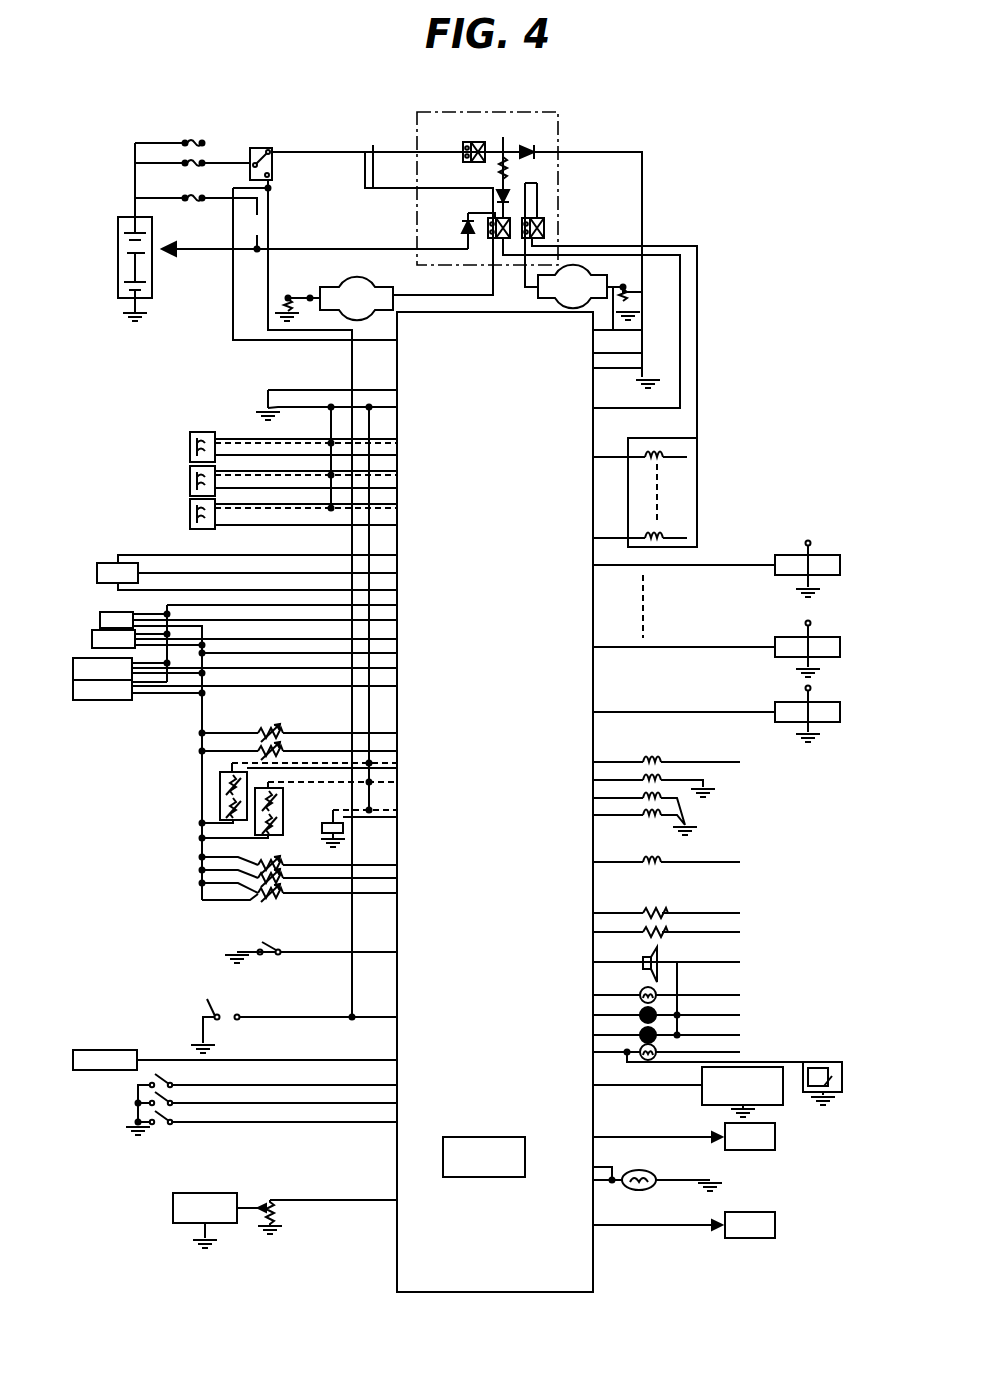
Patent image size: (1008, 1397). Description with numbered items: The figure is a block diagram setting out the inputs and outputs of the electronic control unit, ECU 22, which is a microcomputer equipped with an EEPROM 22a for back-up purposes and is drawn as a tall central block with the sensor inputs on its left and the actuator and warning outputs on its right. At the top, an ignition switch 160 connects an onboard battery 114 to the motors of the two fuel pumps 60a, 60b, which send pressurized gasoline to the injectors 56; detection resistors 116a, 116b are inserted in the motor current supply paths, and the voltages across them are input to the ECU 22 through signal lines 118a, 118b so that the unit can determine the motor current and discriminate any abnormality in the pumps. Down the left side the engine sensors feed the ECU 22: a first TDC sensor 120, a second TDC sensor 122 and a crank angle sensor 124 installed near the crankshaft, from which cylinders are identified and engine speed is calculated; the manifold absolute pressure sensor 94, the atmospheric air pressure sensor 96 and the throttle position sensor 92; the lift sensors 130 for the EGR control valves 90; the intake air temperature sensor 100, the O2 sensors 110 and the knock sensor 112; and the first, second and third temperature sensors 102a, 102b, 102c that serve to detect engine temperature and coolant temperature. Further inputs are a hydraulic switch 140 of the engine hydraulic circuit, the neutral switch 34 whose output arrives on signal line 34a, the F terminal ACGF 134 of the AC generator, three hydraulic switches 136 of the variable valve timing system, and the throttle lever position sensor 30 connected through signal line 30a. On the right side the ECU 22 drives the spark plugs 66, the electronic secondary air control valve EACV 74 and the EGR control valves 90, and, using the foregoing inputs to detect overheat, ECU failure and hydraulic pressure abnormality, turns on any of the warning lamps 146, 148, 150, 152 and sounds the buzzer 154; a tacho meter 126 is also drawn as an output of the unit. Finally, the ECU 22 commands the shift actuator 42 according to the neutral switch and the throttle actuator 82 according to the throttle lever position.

The electronic control unit (ECU) 22 is at (530, 750).
The EEPROM 22a is at (487, 1137).
The ignition switch 160 is at (268, 142).
The onboard battery 114 is at (118, 268).
The detection resistor 116a is at (287, 297).
The detection resistor 116b is at (632, 290).
The fuel pump 60a is at (376, 287).
The fuel pump 60b is at (586, 270).
The signal line 118a is at (370, 322).
The signal line 118b is at (640, 339).
The injector 56 is at (690, 438).
The first TDC sensor 120 is at (190, 450).
The second TDC sensor 122 is at (190, 483).
The crank angle sensor 124 is at (190, 517).
The manifold absolute pressure sensor 94 is at (97, 573).
The atmospheric air pressure sensor 96 is at (100, 617).
The throttle position sensor 92 is at (92, 639).
The lift sensors 130 is at (73, 690).
The intake air temperature sensor 100 is at (218, 756).
The O2 sensors 110 is at (220, 800).
The knock sensor 112 is at (322, 830).
The first temperature sensor 102a is at (231, 857).
The second temperature sensor 102b is at (231, 872).
The third temperature sensor 102c is at (278, 900).
The hydraulic switch 140 is at (256, 942).
The neutral switch 34 is at (212, 1005).
The signal line 34a is at (285, 1017).
The F terminal (ACGF) 134 is at (117, 1050).
The hydraulic switches 136 is at (174, 1112).
The throttle lever position sensor 30 is at (230, 1193).
The signal line 30a is at (315, 1200).
The spark plug 66 is at (787, 635).
The electronic secondary air control valve (EACV) 74 is at (782, 700).
The EGR control valves 90 is at (650, 820).
The buzzer 154 is at (655, 952).
The warning lamp 146 is at (641, 990).
The warning lamp 148 is at (660, 1011).
The warning lamp 150 is at (660, 1030).
The warning lamp 152 is at (660, 1049).
The tachometer 126 is at (702, 1076).
The actuator (electric motor) 42 is at (762, 1147).
The actuator (stepper motor) 82 is at (762, 1235).